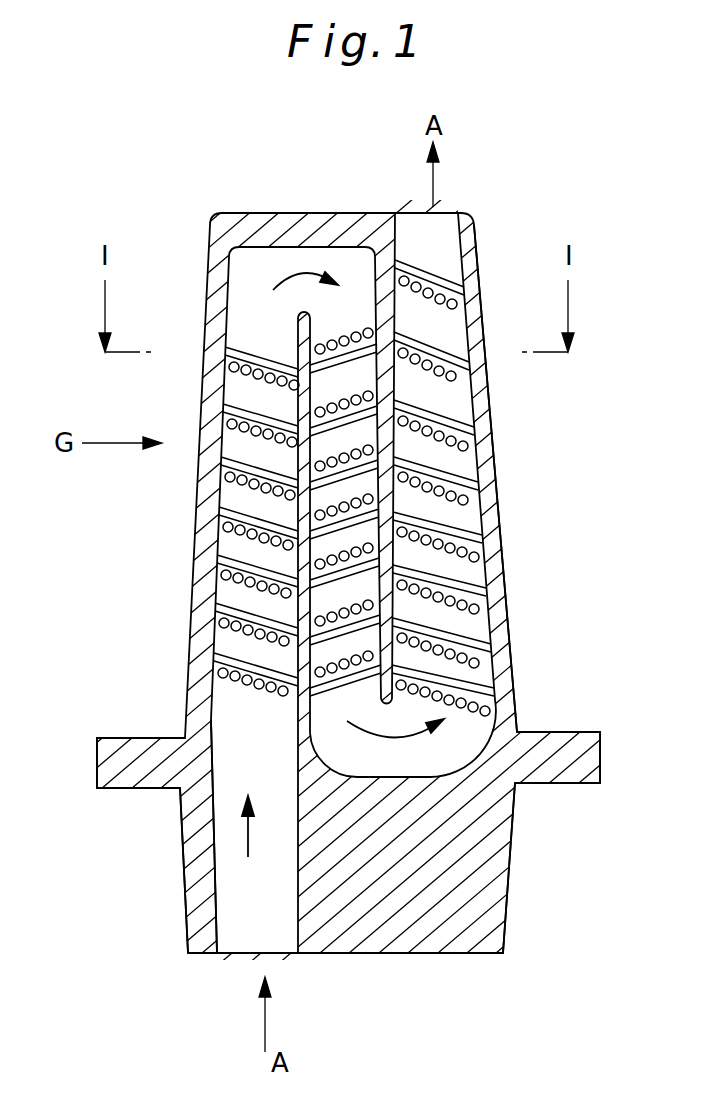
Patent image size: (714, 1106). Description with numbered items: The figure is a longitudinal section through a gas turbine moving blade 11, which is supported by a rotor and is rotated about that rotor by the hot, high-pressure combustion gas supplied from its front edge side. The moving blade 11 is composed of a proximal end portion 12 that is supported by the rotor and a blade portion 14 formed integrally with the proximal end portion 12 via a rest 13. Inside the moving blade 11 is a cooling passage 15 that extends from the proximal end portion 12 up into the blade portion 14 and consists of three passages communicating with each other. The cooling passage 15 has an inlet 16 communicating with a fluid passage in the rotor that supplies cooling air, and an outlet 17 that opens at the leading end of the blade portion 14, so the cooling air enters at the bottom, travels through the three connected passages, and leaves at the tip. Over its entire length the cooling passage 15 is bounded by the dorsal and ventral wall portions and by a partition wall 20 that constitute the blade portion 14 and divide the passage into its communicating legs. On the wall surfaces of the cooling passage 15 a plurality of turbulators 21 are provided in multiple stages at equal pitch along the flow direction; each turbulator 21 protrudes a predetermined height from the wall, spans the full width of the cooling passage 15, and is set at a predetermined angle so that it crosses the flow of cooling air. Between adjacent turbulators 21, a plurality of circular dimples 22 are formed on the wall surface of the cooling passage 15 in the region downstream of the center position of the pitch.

The moving blade 11 is at (255, 195).
The proximal end portion 12 is at (503, 925).
The rest 13 is at (583, 778).
The blade portion 14 is at (490, 438).
The cooling passage 15 is at (208, 818).
The inlet 16 is at (240, 953).
The outlet 17 is at (443, 213).
The partition wall 20 is at (366, 275).
The turbulator 21 is at (235, 510).
The circular dimple 22 is at (238, 530).